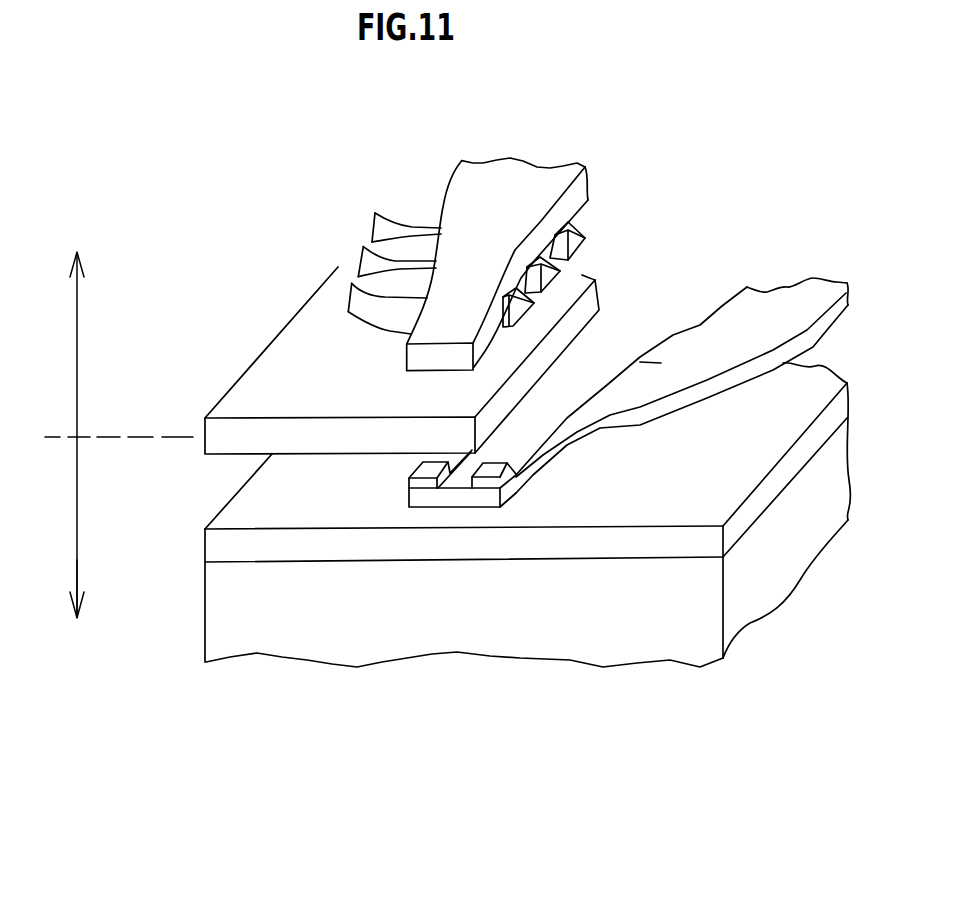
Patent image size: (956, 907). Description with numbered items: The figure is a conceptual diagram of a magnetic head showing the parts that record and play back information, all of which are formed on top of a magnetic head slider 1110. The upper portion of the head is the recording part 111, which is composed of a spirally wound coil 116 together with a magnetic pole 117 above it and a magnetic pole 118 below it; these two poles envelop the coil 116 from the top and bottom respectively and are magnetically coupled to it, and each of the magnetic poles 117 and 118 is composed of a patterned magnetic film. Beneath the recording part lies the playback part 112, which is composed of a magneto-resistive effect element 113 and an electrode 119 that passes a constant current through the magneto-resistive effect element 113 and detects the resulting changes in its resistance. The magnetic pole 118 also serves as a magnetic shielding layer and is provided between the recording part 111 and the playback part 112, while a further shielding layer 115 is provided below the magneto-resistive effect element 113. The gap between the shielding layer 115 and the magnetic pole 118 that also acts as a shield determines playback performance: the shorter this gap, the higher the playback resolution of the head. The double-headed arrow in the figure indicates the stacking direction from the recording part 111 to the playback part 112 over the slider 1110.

The recording part 111 is at (107, 423).
The playback part 112 is at (104, 605).
The magneto-resistive effect element 113 is at (480, 497).
The shielding layer 115 is at (238, 545).
The coil 116 is at (585, 230).
The magnetic pole 117 is at (418, 353).
The magnetic pole 118 is at (243, 432).
The electrode 119 is at (423, 483).
The magnetic head slider 1110 is at (648, 632).